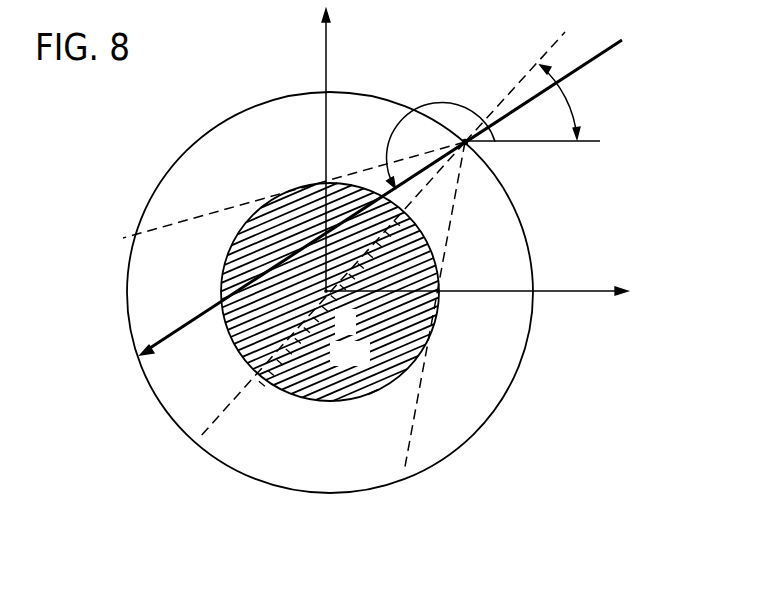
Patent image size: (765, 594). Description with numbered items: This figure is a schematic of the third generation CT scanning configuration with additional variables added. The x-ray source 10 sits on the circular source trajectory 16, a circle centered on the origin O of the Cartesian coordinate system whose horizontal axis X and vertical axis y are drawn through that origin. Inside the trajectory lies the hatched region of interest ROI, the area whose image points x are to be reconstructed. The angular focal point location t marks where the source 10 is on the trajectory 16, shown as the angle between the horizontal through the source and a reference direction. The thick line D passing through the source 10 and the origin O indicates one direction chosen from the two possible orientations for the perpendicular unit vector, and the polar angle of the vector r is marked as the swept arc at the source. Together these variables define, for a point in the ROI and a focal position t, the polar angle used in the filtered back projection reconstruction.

The x-ray source 10 is at (470, 148).
The circular source trajectory 16 is at (483, 428).
The detector line D is at (370, 210).
The region of interest ROI is at (330, 292).
The origin of coordinate system O is at (339, 314).
The angular x-ray focal point location t is at (560, 102).
The x axis X is at (477, 304).
The y axis y is at (336, 150).